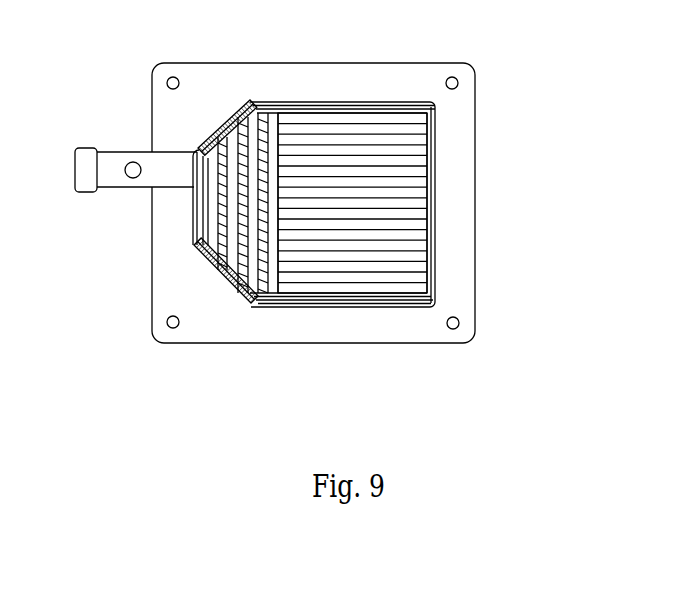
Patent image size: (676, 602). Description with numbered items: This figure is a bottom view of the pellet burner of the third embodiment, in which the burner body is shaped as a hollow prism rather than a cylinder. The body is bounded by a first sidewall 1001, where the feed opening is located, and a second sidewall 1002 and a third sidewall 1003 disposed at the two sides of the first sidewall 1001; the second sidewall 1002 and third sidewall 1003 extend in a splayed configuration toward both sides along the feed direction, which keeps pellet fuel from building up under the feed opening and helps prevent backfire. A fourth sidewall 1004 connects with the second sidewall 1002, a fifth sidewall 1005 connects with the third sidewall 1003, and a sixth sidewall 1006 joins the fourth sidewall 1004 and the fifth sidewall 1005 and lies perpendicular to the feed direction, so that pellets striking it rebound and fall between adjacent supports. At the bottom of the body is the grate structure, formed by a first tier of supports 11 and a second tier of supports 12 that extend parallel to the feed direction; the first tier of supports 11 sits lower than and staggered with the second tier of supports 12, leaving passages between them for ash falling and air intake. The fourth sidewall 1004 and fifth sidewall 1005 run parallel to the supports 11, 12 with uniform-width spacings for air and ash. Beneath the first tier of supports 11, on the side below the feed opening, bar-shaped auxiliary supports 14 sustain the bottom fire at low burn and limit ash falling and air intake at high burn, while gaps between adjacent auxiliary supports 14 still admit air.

The first sidewall 1001 is at (195, 210).
The second sidewall 1002 is at (230, 293).
The third sidewall 1003 is at (230, 122).
The fourth sidewall 1004 is at (350, 300).
The fifth sidewall 1005 is at (340, 100).
The sixth sidewall 1006 is at (433, 163).
The first tier of supports 11 is at (413, 287).
The second tier of supports 12 is at (410, 223).
The auxiliary supports 14 is at (230, 246).